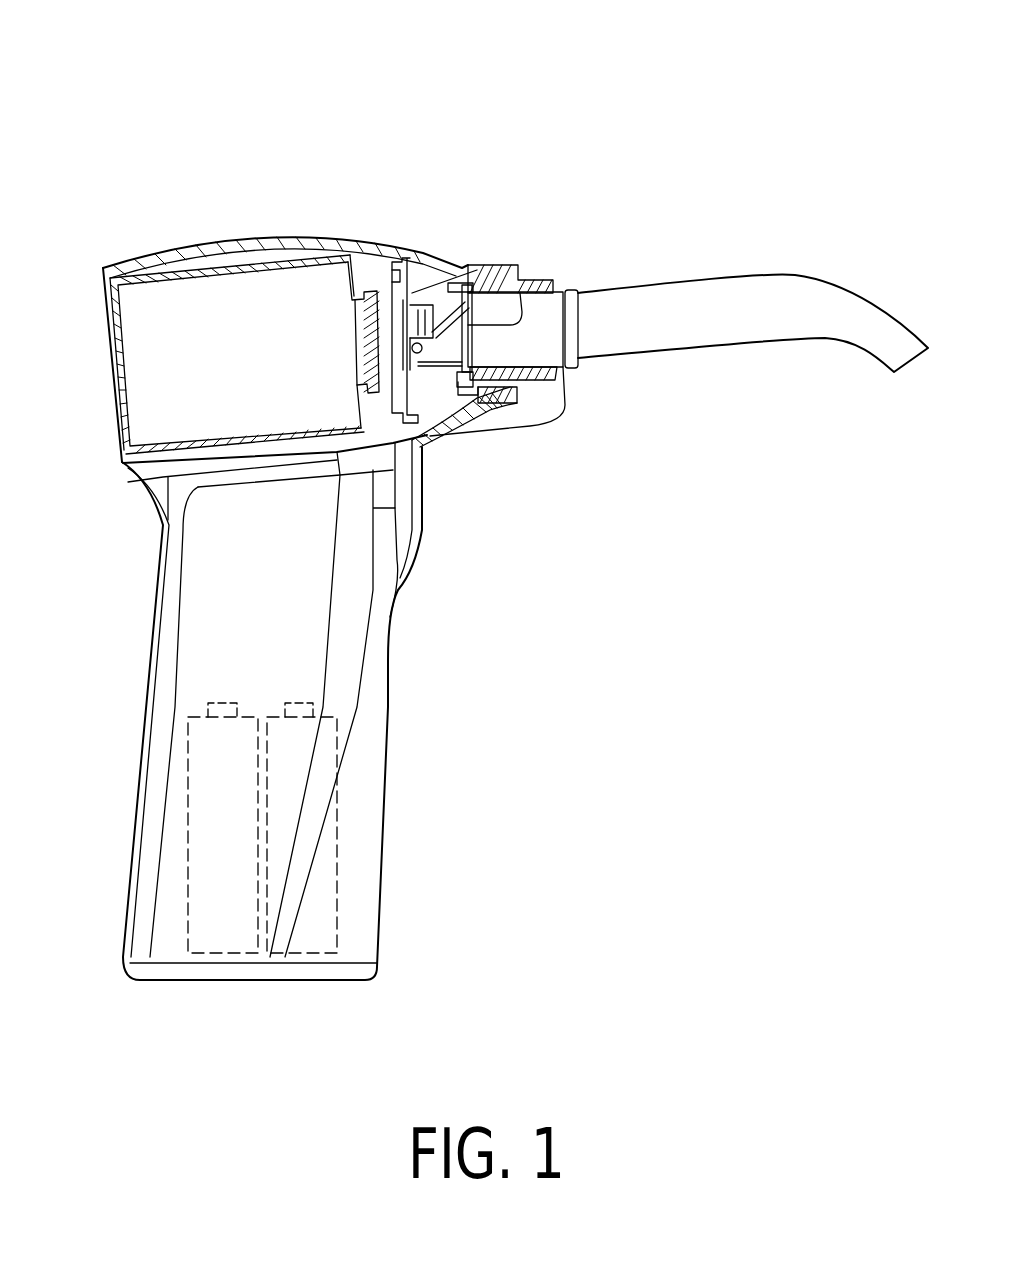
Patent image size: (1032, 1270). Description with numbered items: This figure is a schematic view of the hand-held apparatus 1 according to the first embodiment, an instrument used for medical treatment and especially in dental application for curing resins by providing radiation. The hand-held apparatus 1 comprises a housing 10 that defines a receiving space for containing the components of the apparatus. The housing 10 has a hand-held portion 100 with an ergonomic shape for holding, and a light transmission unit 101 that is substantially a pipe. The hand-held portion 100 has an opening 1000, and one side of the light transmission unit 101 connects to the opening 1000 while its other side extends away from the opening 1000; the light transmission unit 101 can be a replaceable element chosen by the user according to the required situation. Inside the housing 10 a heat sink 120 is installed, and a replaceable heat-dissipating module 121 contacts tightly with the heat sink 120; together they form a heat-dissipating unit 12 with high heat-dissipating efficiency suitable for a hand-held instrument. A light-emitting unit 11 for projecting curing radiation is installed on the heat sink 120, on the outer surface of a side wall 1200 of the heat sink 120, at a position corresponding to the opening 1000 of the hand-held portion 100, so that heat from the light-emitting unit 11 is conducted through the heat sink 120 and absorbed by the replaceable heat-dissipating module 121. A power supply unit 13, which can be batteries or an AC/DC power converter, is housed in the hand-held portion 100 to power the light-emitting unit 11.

The hand-held apparatus 1 is at (73, 44).
The housing 10 is at (655, 590).
The hand-held portion 100 is at (368, 585).
The opening 1000 is at (510, 389).
The light transmission unit 101 is at (690, 352).
The light-emitting unit 11 is at (515, 284).
The heat-dissipating unit 12 is at (398, 127).
The heat sink 120 is at (385, 286).
The side wall 1200 is at (458, 262).
The replaceable heat-dissipating module 121 is at (255, 270).
The power supply unit 13 is at (200, 838).